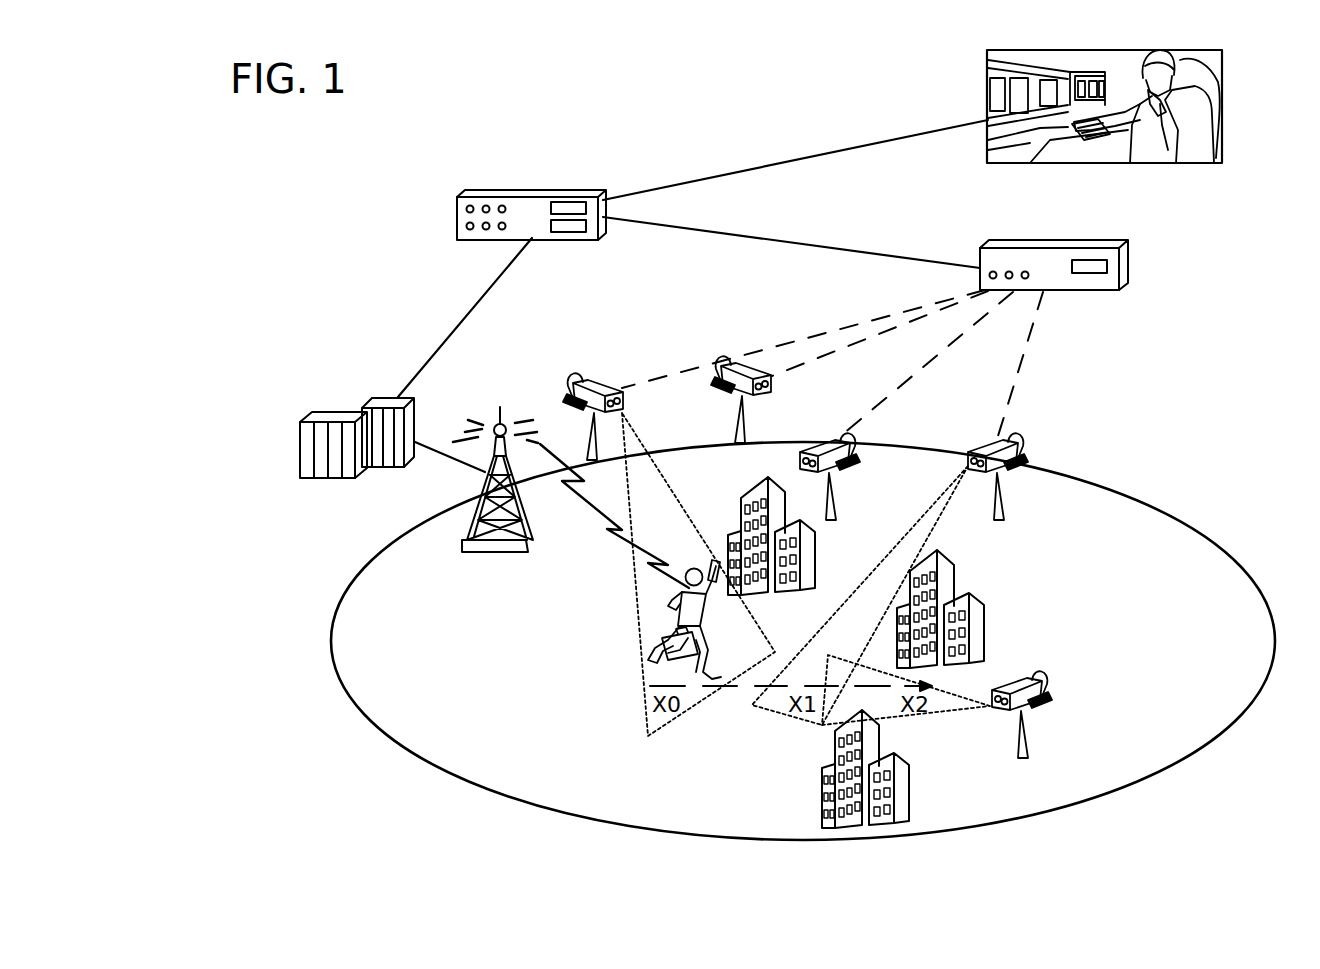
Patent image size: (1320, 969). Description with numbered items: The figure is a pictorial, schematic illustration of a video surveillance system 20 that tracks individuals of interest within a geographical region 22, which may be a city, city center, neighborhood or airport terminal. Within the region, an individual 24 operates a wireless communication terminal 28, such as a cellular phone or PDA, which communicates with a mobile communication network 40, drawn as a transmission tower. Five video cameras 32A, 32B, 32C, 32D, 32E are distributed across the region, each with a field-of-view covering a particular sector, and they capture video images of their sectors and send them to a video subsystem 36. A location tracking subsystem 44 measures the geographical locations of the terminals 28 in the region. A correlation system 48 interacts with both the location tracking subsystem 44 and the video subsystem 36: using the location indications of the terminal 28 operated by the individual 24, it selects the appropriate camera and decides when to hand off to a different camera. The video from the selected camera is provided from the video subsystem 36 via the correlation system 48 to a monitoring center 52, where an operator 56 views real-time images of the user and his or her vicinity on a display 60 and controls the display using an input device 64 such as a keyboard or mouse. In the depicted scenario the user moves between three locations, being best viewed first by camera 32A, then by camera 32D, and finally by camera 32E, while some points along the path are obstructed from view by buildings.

The video surveillance system 20 is at (326, 219).
The geographical region 22 is at (333, 645).
The individual 24 is at (664, 602).
The wireless communication terminal 28 is at (716, 558).
The video camera 32A is at (592, 380).
The video camera 32B is at (738, 372).
The video camera 32C is at (818, 443).
The video camera 32D is at (972, 443).
The video camera 32E is at (1032, 683).
The video subsystem 36 is at (1128, 262).
The mobile communication network 40 is at (492, 554).
The location tracking subsystem 44 is at (298, 445).
The correlation system 48 is at (523, 190).
The monitoring center 52 is at (1089, 132).
The operator 56 is at (1222, 70).
The display 60 is at (990, 95).
The input device 64 is at (1102, 160).